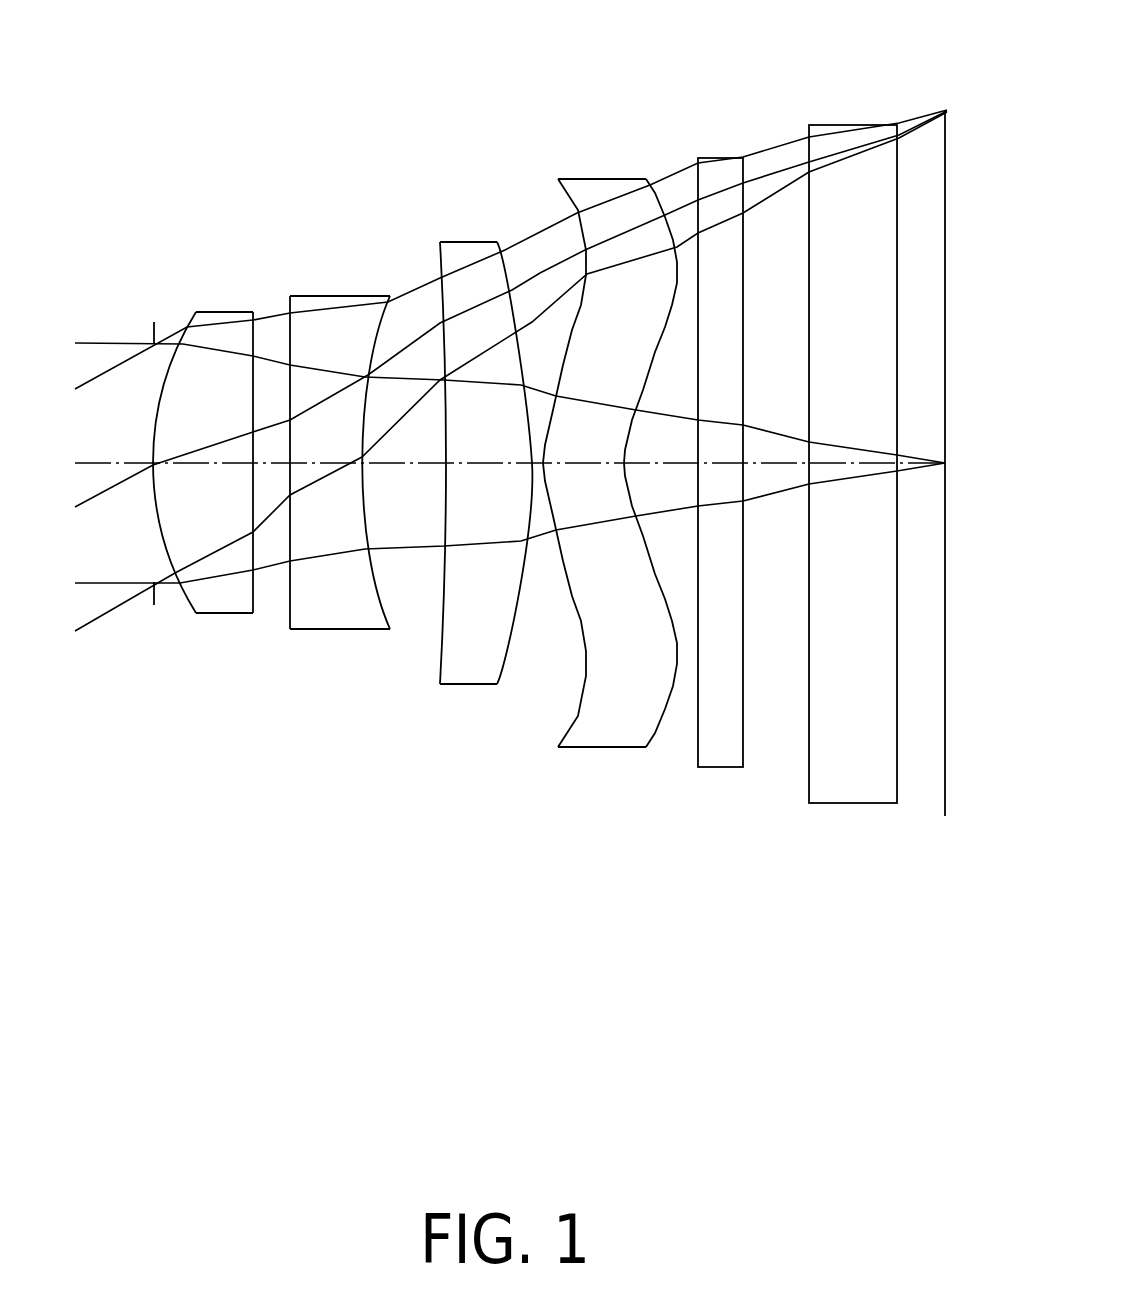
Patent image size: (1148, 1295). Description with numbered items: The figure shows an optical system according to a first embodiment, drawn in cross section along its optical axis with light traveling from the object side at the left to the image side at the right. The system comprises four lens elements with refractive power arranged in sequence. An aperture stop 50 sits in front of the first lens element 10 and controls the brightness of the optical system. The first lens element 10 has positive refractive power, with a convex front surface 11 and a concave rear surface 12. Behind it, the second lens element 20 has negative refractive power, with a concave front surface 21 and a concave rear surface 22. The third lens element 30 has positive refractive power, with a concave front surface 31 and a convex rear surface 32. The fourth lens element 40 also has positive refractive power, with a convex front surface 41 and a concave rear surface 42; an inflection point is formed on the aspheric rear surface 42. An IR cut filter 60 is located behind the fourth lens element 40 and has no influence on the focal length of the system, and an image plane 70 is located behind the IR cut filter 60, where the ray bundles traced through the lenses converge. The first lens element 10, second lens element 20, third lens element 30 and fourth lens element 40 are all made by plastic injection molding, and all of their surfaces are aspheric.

The first lens element 10 is at (175, 449).
The convex front surface 11 is at (168, 582).
The concave rear surface 12 is at (242, 563).
The second lens element 20 is at (316, 462).
The concave front surface 21 is at (282, 578).
The concave rear surface 22 is at (364, 598).
The third lens element 30 is at (458, 459).
The concave front surface 31 is at (435, 640).
The convex rear surface 32 is at (503, 603).
The fourth lens element 40 is at (626, 480).
The convex front surface 41 is at (588, 702).
The concave rear surface 42 is at (682, 637).
The aperture stop 50 is at (154, 321).
The IR cut filter 60 is at (722, 165).
The image plane 70 is at (942, 172).